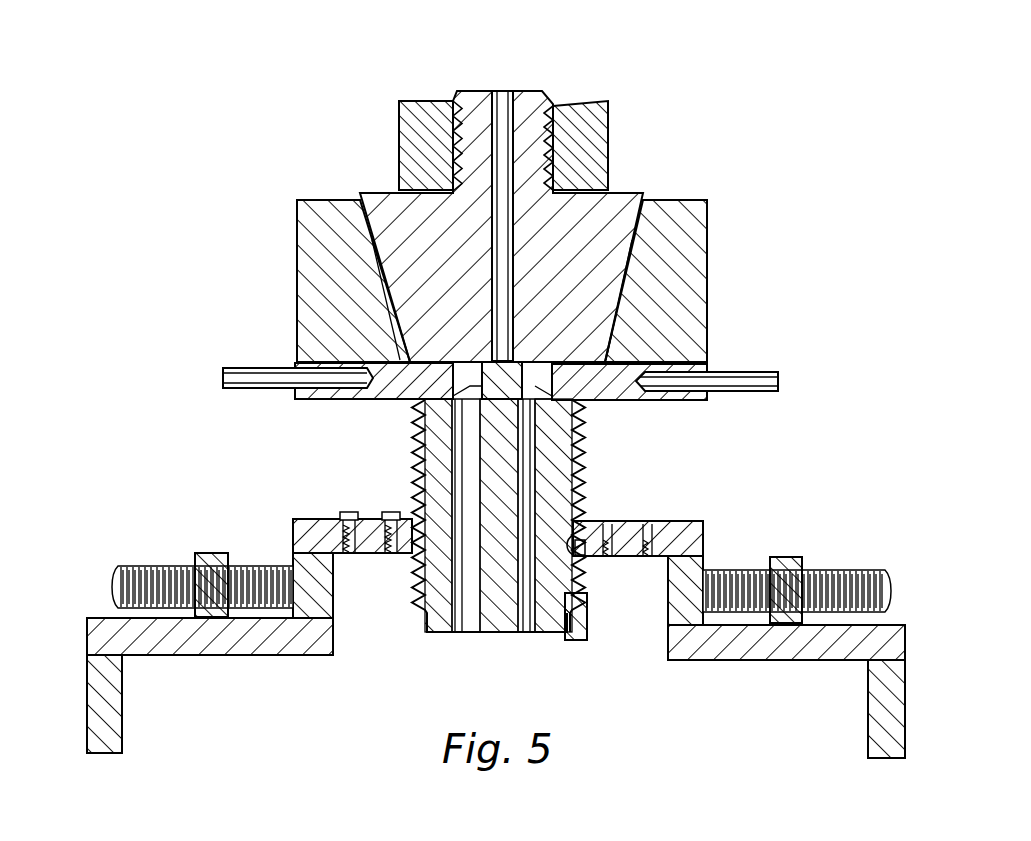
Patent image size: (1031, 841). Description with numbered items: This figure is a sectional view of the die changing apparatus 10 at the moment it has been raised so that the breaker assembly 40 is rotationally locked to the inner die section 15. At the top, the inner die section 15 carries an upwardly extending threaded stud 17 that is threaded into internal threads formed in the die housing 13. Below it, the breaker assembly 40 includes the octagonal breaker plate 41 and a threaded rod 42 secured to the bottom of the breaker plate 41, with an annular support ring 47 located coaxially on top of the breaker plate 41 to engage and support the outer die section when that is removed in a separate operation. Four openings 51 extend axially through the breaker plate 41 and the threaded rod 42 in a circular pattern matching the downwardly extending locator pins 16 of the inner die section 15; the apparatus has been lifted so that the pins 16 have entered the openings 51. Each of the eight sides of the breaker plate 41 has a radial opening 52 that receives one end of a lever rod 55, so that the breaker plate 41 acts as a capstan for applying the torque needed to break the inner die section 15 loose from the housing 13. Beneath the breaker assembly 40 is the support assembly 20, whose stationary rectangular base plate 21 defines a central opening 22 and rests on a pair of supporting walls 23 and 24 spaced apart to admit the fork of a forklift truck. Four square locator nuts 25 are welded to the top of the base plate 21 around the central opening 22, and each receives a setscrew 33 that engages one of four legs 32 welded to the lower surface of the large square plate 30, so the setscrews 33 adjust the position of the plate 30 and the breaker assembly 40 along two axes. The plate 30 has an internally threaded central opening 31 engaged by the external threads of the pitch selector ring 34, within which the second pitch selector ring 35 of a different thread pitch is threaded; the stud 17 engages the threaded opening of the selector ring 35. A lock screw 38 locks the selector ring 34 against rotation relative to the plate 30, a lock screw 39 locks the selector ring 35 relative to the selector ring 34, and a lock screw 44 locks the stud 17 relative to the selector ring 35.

The die changing apparatus 10 is at (963, 333).
The die housing 13 is at (608, 147).
The inner die section 15 is at (623, 190).
The locator pins 16 is at (585, 385).
The threaded stud 17 is at (535, 91).
The support assembly 20 is at (955, 569).
The base plate 21 is at (100, 618).
The central opening 22 is at (333, 642).
The supporting wall 23 is at (122, 717).
The supporting wall 24 is at (905, 697).
The locator nuts 25 is at (213, 553).
The plate 30 is at (650, 521).
The central opening 31 is at (630, 598).
The legs 32 is at (333, 597).
The setscrew 33 is at (133, 565).
The pitch selector ring 34 is at (630, 521).
The pitch selector ring 35 is at (600, 521).
The lock screw 38 is at (348, 512).
The lock screw 39 is at (393, 512).
The breaker assembly 40 is at (852, 242).
The breaker plate 41 is at (678, 400).
The threaded rod 42 is at (555, 640).
The lock screw 44 is at (580, 638).
The support ring 47 is at (707, 257).
The openings 51 is at (470, 428).
The radial opening 52 is at (320, 378).
The lever rod 55 is at (272, 368).